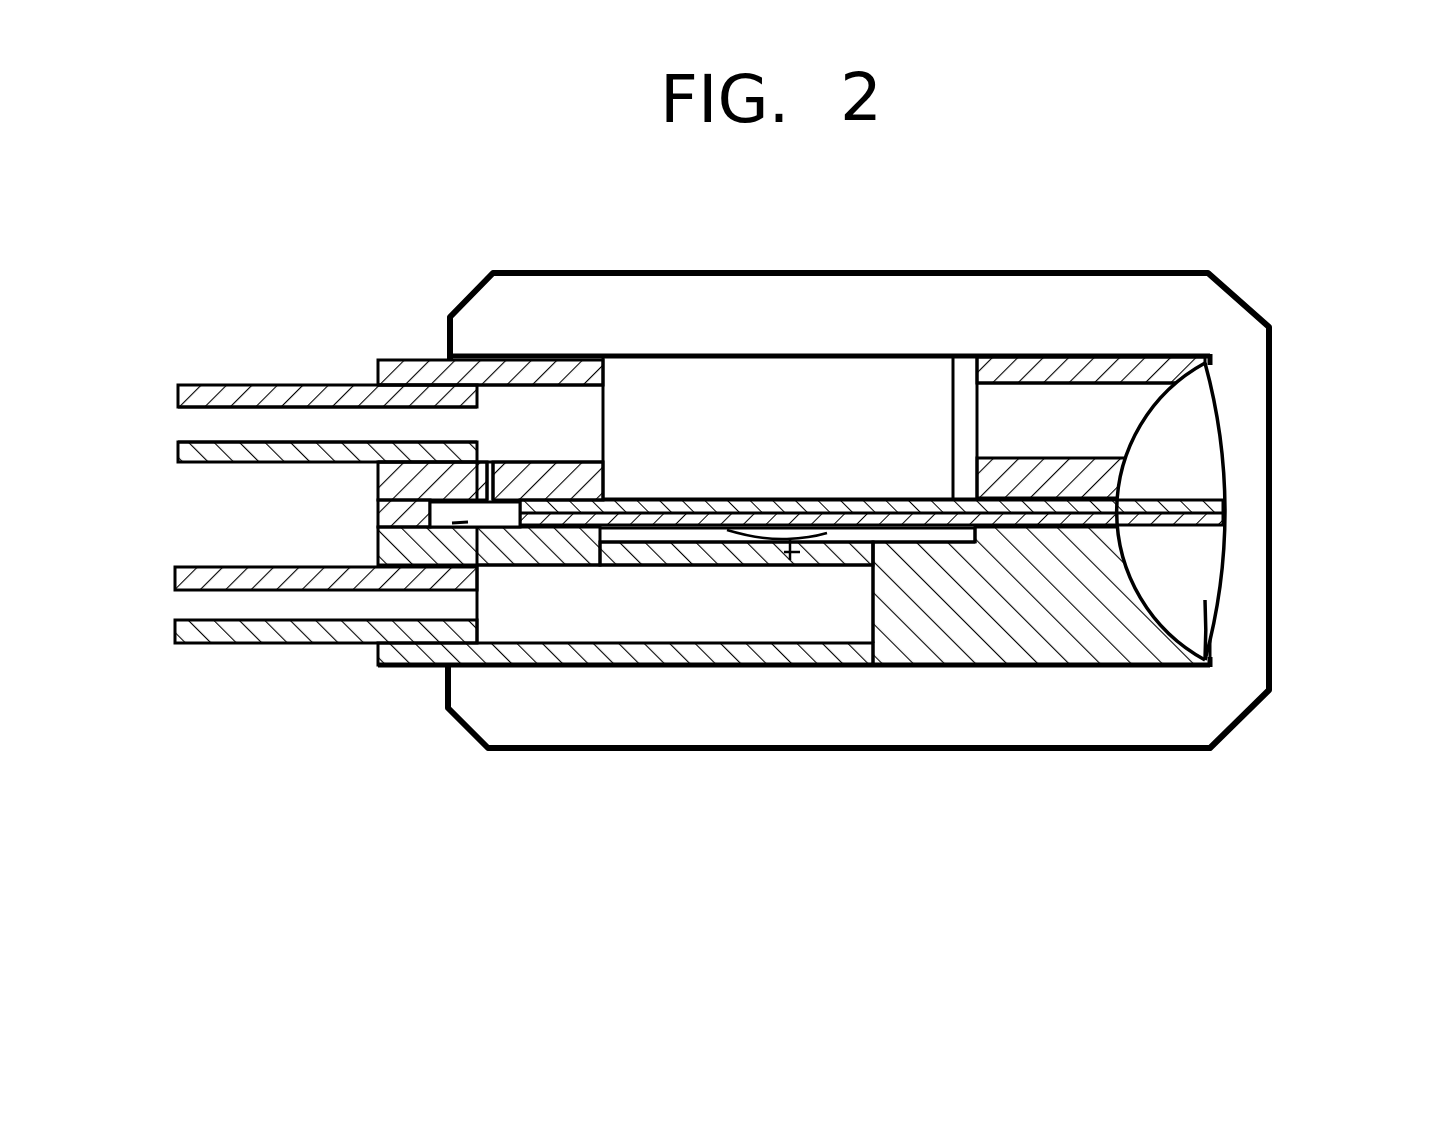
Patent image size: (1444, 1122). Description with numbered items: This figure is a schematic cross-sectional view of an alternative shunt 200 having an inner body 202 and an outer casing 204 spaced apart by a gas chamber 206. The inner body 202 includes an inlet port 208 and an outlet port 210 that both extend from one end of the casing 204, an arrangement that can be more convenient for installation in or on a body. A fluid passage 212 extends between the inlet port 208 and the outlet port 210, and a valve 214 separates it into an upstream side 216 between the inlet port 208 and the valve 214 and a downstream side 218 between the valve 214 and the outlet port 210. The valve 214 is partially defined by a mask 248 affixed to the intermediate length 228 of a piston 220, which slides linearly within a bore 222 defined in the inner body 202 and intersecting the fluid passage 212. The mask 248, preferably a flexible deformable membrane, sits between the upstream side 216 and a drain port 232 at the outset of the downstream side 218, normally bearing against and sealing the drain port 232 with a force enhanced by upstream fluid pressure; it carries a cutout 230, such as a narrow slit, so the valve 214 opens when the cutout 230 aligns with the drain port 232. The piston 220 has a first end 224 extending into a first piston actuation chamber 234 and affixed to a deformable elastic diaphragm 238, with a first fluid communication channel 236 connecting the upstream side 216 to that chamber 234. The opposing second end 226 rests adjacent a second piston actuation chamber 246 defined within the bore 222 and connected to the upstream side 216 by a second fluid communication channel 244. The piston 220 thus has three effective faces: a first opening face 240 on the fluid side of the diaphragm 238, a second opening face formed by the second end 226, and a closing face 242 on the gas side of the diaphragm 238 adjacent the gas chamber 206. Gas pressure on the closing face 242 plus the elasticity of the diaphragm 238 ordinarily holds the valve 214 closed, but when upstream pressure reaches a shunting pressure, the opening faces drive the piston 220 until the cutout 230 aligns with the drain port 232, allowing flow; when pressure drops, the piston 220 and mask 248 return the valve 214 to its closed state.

The shunt 200 is at (748, 240).
The inner body 202 is at (545, 378).
The outer casing 204 is at (612, 270).
The gas chamber 206 is at (673, 307).
The inlet port 208 is at (290, 385).
The outlet port 210 is at (300, 630).
The fluid passage 212 is at (795, 455).
The valve 214 is at (838, 545).
The upstream side 216 is at (533, 408).
The downstream side 218 is at (625, 620).
The piston 220 is at (1075, 530).
The bore 222 is at (447, 527).
The first end 224 is at (1223, 503).
The second end 226 is at (503, 527).
The intermediate length 228 is at (953, 480).
The cutout 230 is at (780, 547).
The drain port 232 is at (825, 547).
The first piston actuation chamber 234 is at (1198, 598).
The first fluid communication channel 236 is at (1100, 387).
The deformable elastic diaphragm 238 is at (1223, 565).
The first opening face 240 is at (1210, 552).
The closing face 242 is at (1217, 617).
The second fluid communication channel 244 is at (383, 483).
The second piston actuation chamber 246 is at (466, 523).
The mask 248 is at (725, 552).